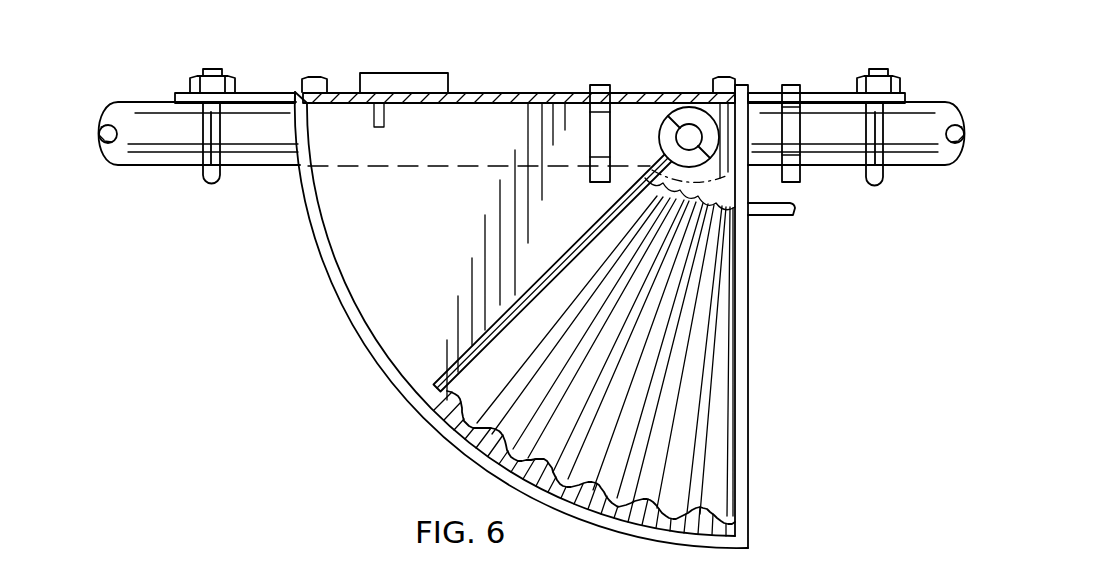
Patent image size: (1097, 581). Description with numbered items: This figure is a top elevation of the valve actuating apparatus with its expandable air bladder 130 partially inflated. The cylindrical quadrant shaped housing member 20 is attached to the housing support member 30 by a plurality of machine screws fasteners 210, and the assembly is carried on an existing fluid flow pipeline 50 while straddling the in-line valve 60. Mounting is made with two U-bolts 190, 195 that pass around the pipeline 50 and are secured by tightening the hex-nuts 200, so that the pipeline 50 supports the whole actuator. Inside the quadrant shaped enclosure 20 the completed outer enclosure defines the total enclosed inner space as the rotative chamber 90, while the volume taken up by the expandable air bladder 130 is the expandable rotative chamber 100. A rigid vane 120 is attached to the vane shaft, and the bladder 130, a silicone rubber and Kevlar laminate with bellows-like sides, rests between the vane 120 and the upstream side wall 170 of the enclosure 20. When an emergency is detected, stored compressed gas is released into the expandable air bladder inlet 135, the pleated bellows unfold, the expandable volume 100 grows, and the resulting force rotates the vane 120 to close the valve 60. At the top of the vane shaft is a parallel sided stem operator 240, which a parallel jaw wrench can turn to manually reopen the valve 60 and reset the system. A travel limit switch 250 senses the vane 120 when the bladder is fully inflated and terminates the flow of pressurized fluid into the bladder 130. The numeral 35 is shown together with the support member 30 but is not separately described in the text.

The cylindrical quadrant shaped housing member 20 is at (378, 373).
The housing support member 30 is at (519, 64).
The mounting plate surface 35 is at (515, 90).
The fluid flow pipeline 50 is at (136, 140).
The in-line valve 60 is at (653, 137).
The rotative chamber 90 is at (430, 224).
The expandable rotative chamber 100 is at (520, 418).
The rigid vane 120 is at (530, 283).
The expandable air bladder 130 is at (672, 436).
The expandable air bladder inlet 135 is at (778, 217).
The upstream side wall 170 is at (750, 384).
The U-bolt 190 is at (878, 187).
The U-bolt 195 is at (209, 184).
The hex-nuts 200 is at (196, 76).
The machine screws fasteners 210 is at (315, 76).
The parallel sided stem operator 240 is at (678, 124).
The travel limit switch 250 is at (396, 72).